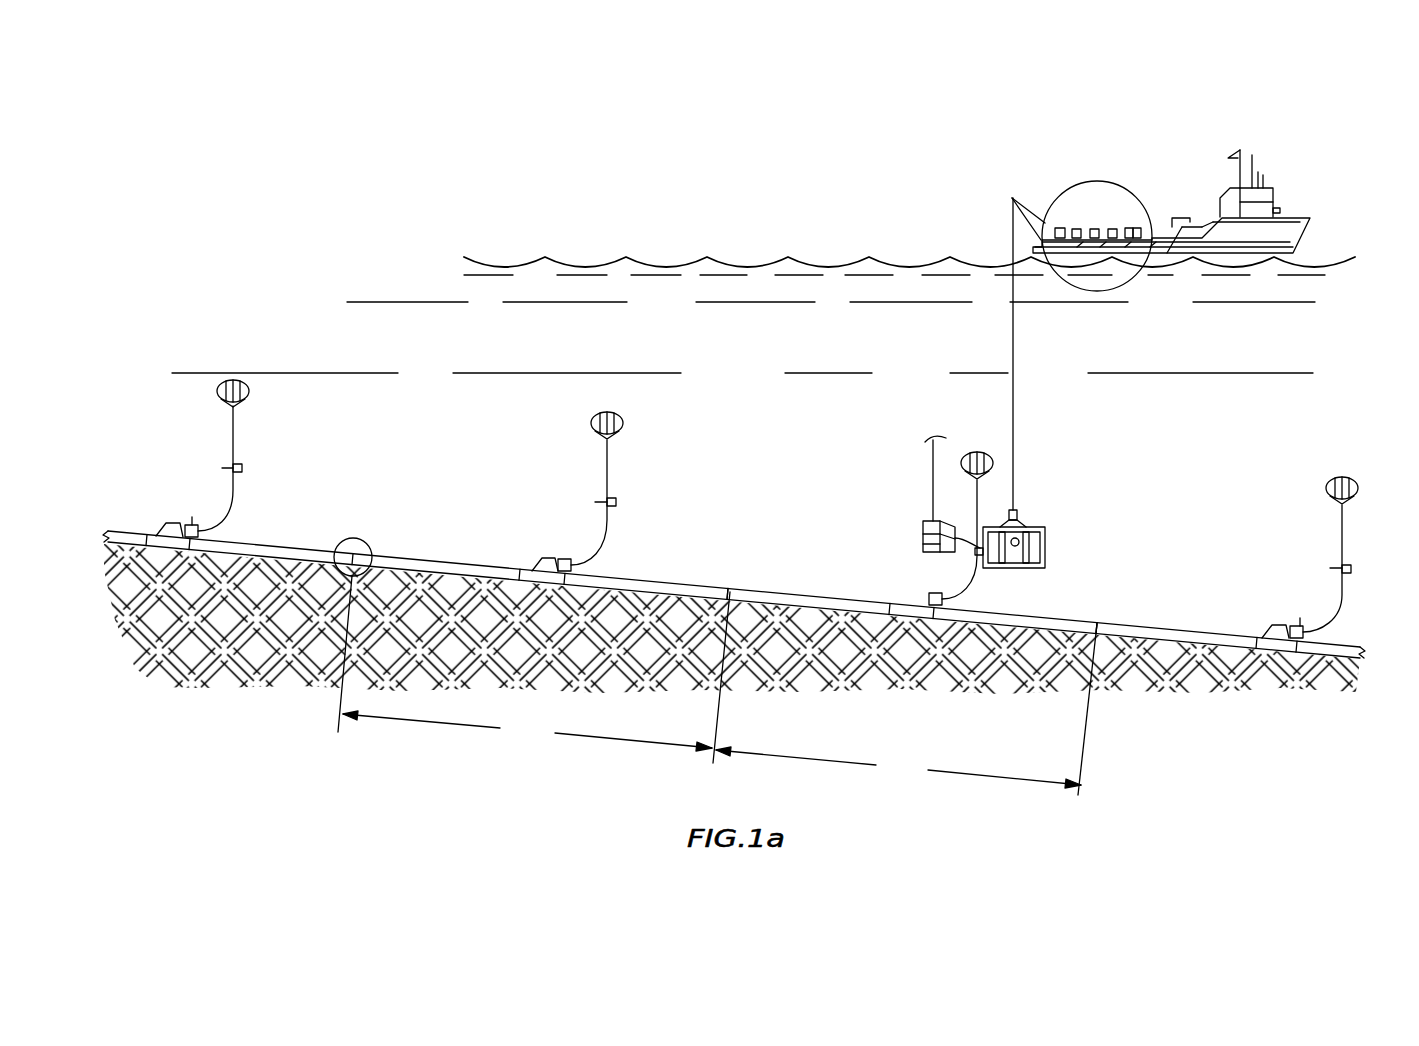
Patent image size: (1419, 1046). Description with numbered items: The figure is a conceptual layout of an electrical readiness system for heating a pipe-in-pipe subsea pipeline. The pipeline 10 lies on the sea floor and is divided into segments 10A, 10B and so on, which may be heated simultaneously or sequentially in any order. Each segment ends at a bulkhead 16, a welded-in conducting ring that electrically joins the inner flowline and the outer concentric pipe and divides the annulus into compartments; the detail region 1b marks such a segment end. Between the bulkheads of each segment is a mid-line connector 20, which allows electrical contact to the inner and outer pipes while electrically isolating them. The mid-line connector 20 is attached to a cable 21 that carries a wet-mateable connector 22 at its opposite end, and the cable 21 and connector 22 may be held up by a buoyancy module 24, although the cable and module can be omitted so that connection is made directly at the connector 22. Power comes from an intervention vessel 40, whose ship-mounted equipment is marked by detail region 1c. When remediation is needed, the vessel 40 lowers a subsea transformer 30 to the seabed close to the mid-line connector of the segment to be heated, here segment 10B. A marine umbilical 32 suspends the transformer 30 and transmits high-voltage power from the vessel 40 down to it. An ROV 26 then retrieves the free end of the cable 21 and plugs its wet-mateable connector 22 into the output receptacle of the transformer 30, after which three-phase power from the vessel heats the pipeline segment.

The pipeline 10 is at (130, 531).
The detail of segment end 1b is at (362, 540).
The detail of ship-mounted equipment 1c is at (1092, 181).
The intervention vessel 40 is at (1298, 149).
The marine umbilical 32 is at (1016, 413).
The buoyancy module 24 is at (625, 425).
The wet-mateable connector 22 is at (566, 558).
The mid-line connector 20 is at (547, 556).
The cable 21 is at (603, 551).
The bulkhead 16 is at (729, 597).
The ROV 26 is at (923, 527).
The subsea transformer 30 is at (1045, 546).
The segment 10A is at (534, 669).
The segment 10B is at (906, 709).